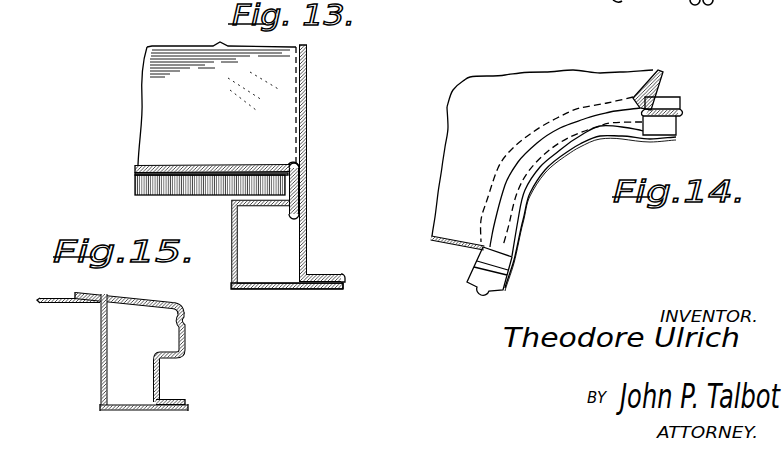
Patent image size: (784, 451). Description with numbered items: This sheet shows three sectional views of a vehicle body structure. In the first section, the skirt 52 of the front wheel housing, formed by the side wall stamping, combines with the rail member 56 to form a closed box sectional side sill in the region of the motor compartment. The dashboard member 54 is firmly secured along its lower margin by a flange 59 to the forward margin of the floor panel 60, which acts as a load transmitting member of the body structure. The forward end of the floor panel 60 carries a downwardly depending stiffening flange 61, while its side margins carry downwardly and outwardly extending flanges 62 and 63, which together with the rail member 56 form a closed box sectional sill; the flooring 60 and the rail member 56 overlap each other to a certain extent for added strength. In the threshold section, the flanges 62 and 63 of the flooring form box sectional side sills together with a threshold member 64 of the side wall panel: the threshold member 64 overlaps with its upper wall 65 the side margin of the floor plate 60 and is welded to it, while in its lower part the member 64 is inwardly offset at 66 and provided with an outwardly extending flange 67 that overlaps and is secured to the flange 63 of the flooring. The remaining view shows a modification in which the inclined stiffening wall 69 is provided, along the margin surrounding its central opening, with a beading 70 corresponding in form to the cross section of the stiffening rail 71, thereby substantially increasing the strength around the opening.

In FIG. 13, the skirt 52 is at (308, 100).
In FIG. 13, the dashboard member 54 is at (140, 115).
In FIG. 13, the rail member 56 is at (231, 240).
In FIG. 13, the flange 59 is at (135, 166).
In FIG. 13, the floor panel 60 is at (133, 175).
In FIG. 15, the floor panel 60 is at (45, 308).
In FIG. 13, the stiffening flange 61 is at (170, 190).
In FIG. 13, the flange 62 is at (292, 203).
In FIG. 15, the flange 62 is at (100, 357).
In FIG. 13, the flange 63 is at (348, 277).
In FIG. 15, the flange 63 is at (180, 417).
In FIG. 15, the threshold member 64 is at (185, 340).
In FIG. 15, the upper wall 65 is at (145, 300).
In FIG. 15, the inward offset 66 is at (160, 375).
In FIG. 15, the outwardly extending flange 67 is at (180, 398).
In FIG. 14, the inclined stiffening wall 69 is at (540, 85).
In FIG. 14, the beading 70 is at (633, 97).
In FIG. 14, the stiffening rail 71 is at (678, 108).